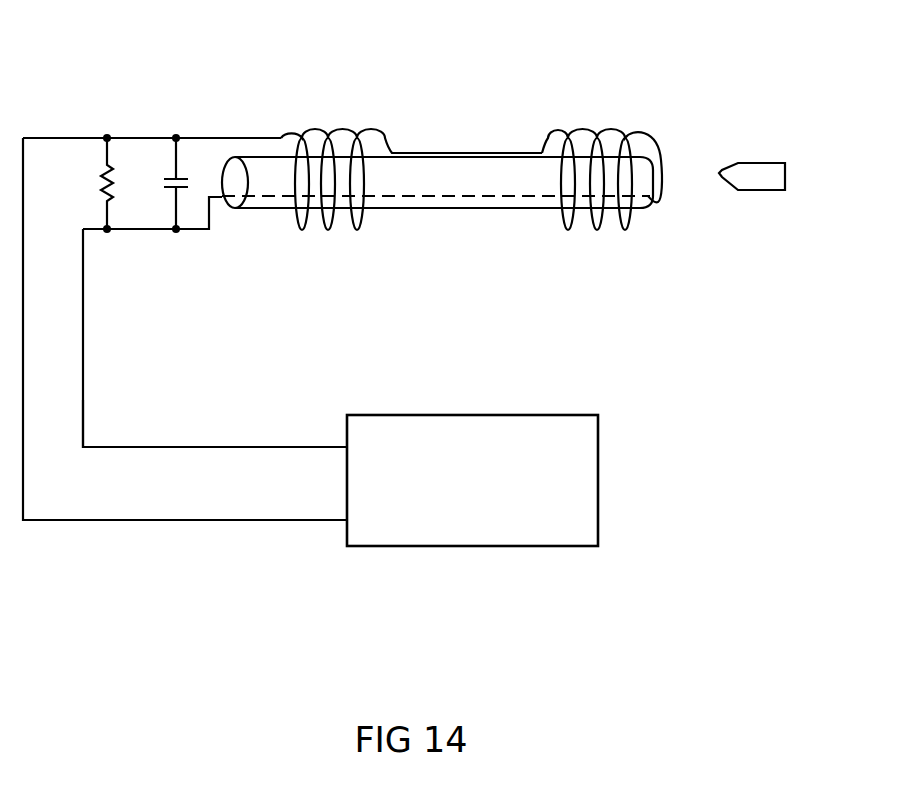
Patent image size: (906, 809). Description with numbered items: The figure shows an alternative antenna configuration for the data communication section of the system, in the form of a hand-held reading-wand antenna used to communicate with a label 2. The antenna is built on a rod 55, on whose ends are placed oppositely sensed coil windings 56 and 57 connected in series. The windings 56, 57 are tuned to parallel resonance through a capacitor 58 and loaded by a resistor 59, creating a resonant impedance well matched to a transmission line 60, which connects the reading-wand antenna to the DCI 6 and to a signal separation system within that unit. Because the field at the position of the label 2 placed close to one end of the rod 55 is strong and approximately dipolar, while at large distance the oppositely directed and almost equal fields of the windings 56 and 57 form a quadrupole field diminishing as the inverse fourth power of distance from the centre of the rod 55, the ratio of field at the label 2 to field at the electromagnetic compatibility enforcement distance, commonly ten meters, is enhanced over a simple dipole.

The label 2 is at (786, 173).
The DCI 6 is at (578, 415).
The rod 55 is at (453, 180).
The coil winding 56 is at (598, 133).
The coil winding 57 is at (328, 128).
The capacitor 58 is at (185, 177).
The resistor 59 is at (110, 167).
The transmission line 60 is at (170, 447).